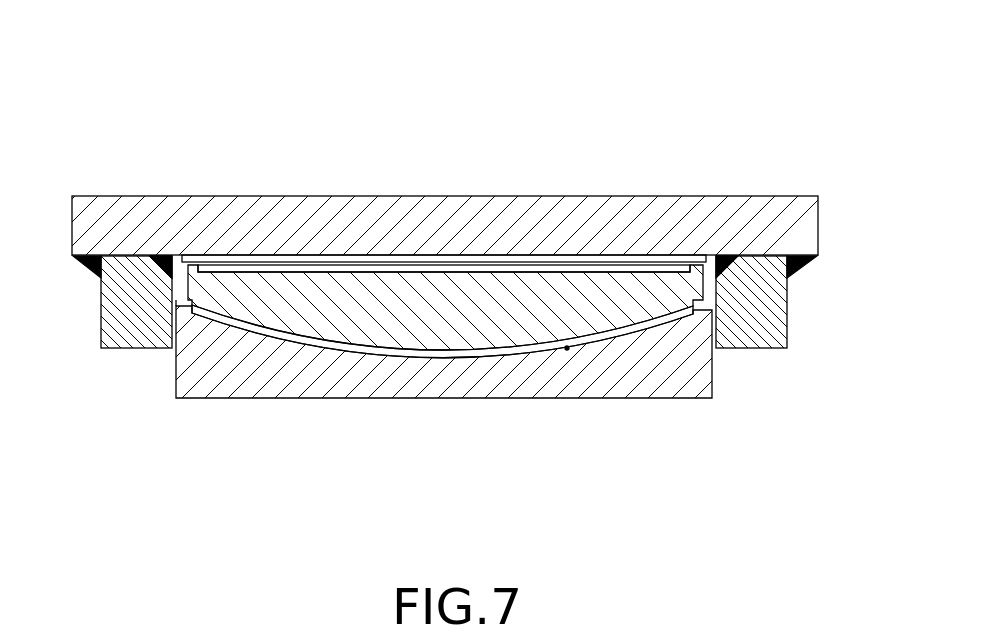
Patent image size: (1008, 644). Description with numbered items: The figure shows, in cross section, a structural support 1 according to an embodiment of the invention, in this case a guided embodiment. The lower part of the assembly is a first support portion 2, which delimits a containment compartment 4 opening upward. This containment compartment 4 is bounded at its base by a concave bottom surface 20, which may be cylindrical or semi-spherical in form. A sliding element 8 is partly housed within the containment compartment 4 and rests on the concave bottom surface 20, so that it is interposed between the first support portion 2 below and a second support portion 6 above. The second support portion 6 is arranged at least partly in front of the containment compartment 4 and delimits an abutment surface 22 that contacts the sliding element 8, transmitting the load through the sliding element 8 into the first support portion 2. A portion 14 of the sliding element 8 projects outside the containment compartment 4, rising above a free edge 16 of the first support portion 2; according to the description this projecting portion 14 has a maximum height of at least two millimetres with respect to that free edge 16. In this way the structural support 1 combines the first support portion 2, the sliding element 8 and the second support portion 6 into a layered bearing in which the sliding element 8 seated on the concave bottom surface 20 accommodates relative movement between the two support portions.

The structural support 1 is at (744, 94).
The first support portion 2 is at (716, 386).
The containment compartment 4 is at (240, 272).
The second support portion 6 is at (822, 217).
The sliding element 8 is at (555, 268).
The projecting portion 14 is at (189, 300).
The free edge 16 is at (705, 302).
The concave bottom surface 20 is at (568, 350).
The abutment surface 22 is at (460, 263).